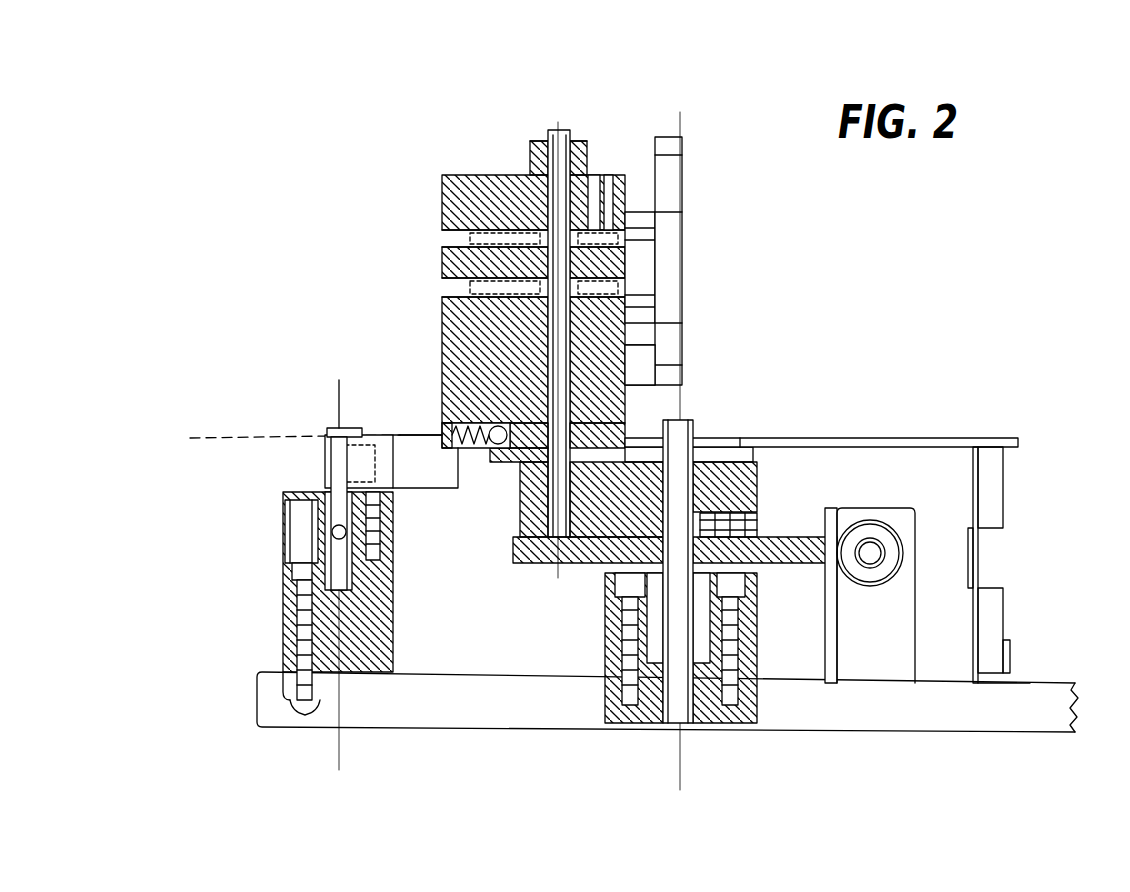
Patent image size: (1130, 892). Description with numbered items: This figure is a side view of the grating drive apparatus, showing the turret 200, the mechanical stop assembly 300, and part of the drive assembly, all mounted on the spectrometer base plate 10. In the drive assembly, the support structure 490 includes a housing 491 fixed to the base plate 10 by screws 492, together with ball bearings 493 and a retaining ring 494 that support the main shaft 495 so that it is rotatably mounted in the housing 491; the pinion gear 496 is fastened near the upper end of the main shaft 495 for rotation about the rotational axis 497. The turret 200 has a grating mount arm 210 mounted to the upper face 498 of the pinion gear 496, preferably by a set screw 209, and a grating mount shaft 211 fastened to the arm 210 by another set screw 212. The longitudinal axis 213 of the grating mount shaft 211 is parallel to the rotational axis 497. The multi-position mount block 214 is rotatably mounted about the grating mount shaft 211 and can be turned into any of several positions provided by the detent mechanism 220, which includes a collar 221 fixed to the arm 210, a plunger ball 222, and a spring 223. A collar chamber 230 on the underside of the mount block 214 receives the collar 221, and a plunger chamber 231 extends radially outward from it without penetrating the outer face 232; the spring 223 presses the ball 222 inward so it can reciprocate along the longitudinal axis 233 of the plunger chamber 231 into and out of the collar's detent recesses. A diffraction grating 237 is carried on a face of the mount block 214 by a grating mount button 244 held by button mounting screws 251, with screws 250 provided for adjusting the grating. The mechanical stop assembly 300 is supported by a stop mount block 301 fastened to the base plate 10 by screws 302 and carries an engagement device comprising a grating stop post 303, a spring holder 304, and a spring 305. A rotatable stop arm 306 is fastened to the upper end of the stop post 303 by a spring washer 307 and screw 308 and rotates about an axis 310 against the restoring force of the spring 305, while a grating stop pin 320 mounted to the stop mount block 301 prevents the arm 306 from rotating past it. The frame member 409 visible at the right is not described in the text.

The spectrometer base plate 10 is at (1068, 718).
The turret 200 is at (447, 150).
The set screw 209 is at (760, 516).
The grating mount arm 210 is at (748, 478).
The grating mount shaft 211 is at (548, 540).
The set screw 212 is at (516, 548).
The longitudinal axis 213 is at (556, 134).
The multi-position mount block 214 is at (442, 200).
The detent mechanism 220 is at (514, 465).
The collar 221 is at (630, 432).
The plunger ball 222 is at (490, 430).
The spring 223 is at (448, 450).
The collar chamber 230 is at (622, 412).
The plunger chamber 231 is at (339, 425).
The outer face 232 is at (444, 430).
The longitudinal axis 233 is at (192, 436).
The diffraction grating 237 is at (688, 218).
The grating mount button 244 is at (655, 225).
The screw 250 is at (606, 218).
The button mounting screw 251 is at (596, 172).
The mechanical stop assembly 300 is at (283, 345).
The stop mount block 301 is at (283, 672).
The screw 302 is at (310, 718).
The grating stop post 303 is at (310, 630).
The spring holder 304 is at (320, 548).
The spring 305 is at (292, 495).
The rotatable stop arm 306 is at (326, 462).
The spring washer 307 is at (327, 428).
The screw 308 is at (325, 432).
The axis 310 is at (341, 768).
The grating stop pin 320 is at (375, 560).
The frame 409 is at (907, 580).
The support structure 490 is at (653, 598).
The housing 491 is at (754, 600).
The screw 492 is at (745, 640).
The ball bearing 493 is at (720, 723).
The retaining ring 494 is at (622, 600).
The main shaft 495 is at (666, 723).
The pinion gear 496 is at (812, 565).
The rotational axis 497 is at (738, 416).
The upper face 498 is at (815, 547).